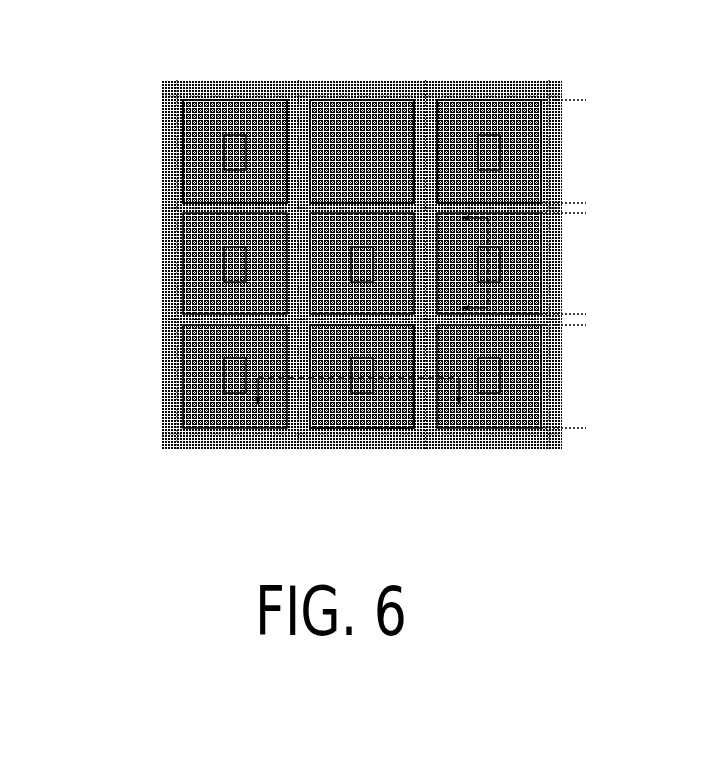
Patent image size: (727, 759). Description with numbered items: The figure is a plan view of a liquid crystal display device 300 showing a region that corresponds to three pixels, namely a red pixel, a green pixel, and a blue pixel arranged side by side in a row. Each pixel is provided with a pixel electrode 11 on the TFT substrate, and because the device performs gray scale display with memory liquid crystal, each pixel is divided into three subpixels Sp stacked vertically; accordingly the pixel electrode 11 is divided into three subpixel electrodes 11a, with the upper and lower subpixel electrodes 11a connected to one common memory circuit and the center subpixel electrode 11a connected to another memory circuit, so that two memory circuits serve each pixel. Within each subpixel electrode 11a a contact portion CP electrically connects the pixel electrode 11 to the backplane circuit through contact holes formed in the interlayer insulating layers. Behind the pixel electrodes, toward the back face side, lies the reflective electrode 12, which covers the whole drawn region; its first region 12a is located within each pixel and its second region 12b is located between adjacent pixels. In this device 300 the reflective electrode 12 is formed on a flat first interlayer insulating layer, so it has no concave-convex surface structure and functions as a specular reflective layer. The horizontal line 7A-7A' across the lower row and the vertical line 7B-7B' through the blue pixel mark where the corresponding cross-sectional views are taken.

The liquid crystal display device 300 is at (573, 69).
The pixel electrode 11 is at (294, 264).
The subpixel electrode 11a is at (175, 173).
The reflective electrode 12 is at (378, 427).
The first region 12a is at (383, 406).
The second region 12b is at (428, 407).
The contact portion CP is at (368, 252).
The subpixel Sp is at (580, 101).
The section line 7A-7A' 7A is at (342, 382).
The section line 7A- 7A' is at (478, 382).
The section line 7B-7B' 7B is at (481, 247).
The section line 7B- 7B' is at (482, 324).